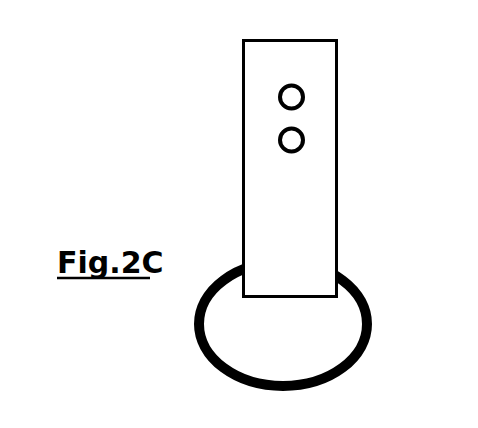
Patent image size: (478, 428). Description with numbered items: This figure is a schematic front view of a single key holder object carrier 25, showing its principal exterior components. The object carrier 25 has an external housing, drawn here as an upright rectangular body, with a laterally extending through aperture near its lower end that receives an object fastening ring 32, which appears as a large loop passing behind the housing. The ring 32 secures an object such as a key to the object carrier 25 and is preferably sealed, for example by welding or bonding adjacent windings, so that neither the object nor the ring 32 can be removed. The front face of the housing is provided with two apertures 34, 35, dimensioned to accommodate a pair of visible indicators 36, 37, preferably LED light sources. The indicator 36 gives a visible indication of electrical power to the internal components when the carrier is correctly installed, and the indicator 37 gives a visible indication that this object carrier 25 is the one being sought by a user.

The object carrier 25 is at (226, 70).
The object fastening ring 32 is at (370, 345).
The aperture 34 is at (303, 94).
The aperture 35 is at (303, 143).
The visible indicator 36 is at (291, 96).
The visible indicator 37 is at (290, 138).